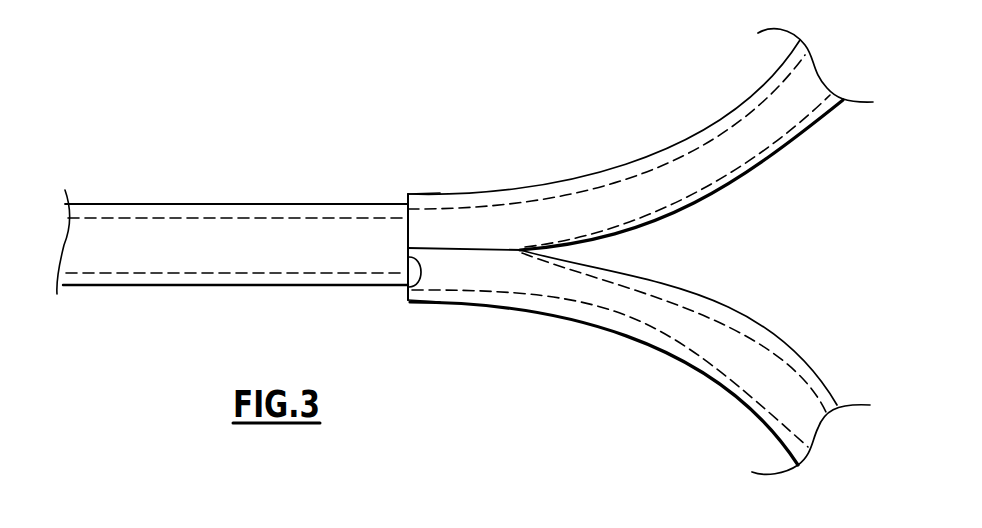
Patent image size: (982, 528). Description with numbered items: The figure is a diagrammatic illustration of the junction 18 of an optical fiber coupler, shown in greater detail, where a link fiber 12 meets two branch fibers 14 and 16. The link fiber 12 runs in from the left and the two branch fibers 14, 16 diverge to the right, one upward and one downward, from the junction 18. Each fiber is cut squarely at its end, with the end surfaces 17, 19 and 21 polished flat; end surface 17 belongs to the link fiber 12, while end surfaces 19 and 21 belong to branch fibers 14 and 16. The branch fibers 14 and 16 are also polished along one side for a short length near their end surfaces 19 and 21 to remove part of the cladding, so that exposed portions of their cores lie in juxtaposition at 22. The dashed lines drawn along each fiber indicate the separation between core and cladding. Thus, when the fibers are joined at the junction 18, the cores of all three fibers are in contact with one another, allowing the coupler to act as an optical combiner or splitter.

The link fiber 12 is at (128, 203).
The branch fiber 14 is at (698, 133).
The branch fiber 16 is at (717, 295).
The end surface 17 is at (408, 290).
The junction 18 is at (390, 180).
The end surface 19 is at (408, 205).
The end surface 21 is at (410, 300).
The juxtaposition of exposed core portions 22 is at (470, 248).